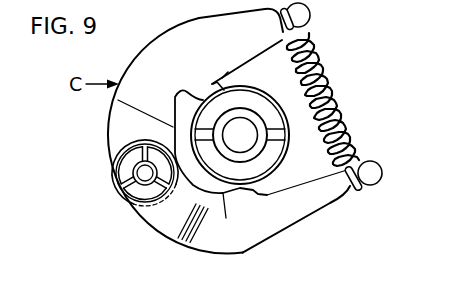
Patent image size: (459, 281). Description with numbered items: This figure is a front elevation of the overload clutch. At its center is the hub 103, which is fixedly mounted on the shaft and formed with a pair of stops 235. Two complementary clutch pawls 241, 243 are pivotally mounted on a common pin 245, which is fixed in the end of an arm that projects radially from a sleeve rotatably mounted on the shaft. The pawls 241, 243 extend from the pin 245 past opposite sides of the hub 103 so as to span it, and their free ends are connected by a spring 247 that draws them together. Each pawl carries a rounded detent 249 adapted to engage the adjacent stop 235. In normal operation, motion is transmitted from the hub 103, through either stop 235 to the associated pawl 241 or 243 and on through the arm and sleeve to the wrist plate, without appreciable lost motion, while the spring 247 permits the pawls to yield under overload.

The hub 103 is at (287, 160).
The stops 235 is at (177, 96).
The clutch pawl 241 is at (194, 30).
The clutch pawl 243 is at (281, 229).
The pin 245 is at (143, 174).
The spring 247 is at (334, 100).
The rounded detent 249 is at (228, 72).